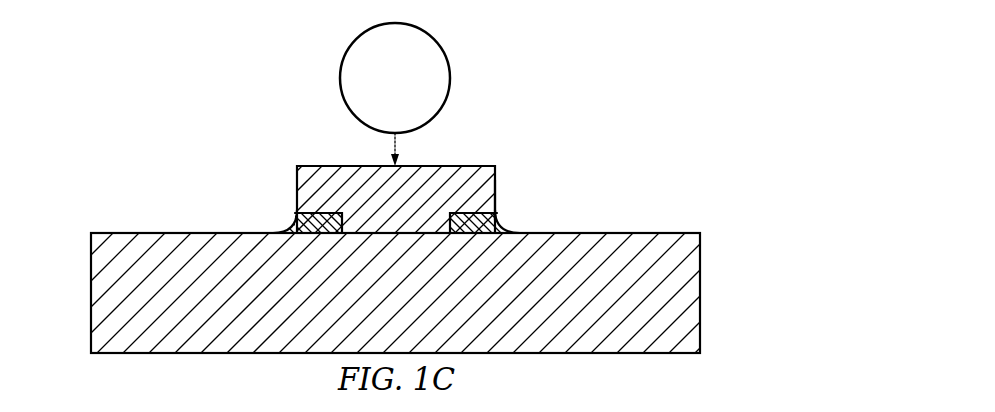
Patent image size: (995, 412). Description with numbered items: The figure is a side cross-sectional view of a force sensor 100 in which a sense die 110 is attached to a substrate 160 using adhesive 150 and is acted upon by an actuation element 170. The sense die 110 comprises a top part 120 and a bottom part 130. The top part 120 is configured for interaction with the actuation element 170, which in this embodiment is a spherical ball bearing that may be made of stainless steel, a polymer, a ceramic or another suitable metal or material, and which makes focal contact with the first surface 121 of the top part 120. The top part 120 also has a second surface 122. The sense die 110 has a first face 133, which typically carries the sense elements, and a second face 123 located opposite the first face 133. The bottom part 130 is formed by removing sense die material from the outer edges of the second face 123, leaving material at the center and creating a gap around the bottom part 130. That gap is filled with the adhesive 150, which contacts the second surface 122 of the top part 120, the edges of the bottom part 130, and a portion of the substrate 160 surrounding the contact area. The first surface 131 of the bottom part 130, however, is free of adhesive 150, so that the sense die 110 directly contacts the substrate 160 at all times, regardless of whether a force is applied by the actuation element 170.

The force sensor 100 is at (594, 197).
The sense die 110 is at (486, 165).
The top part 120 is at (318, 180).
The first surface 121 is at (402, 165).
The second surface 122 is at (476, 212).
The second face 123 is at (341, 166).
The bottom part 130 is at (372, 217).
The first surface of bottom part 131 is at (395, 236).
The first face 133 is at (357, 235).
The adhesive 150 is at (500, 222).
The substrate 160 is at (661, 266).
The actuation element 170 is at (442, 47).